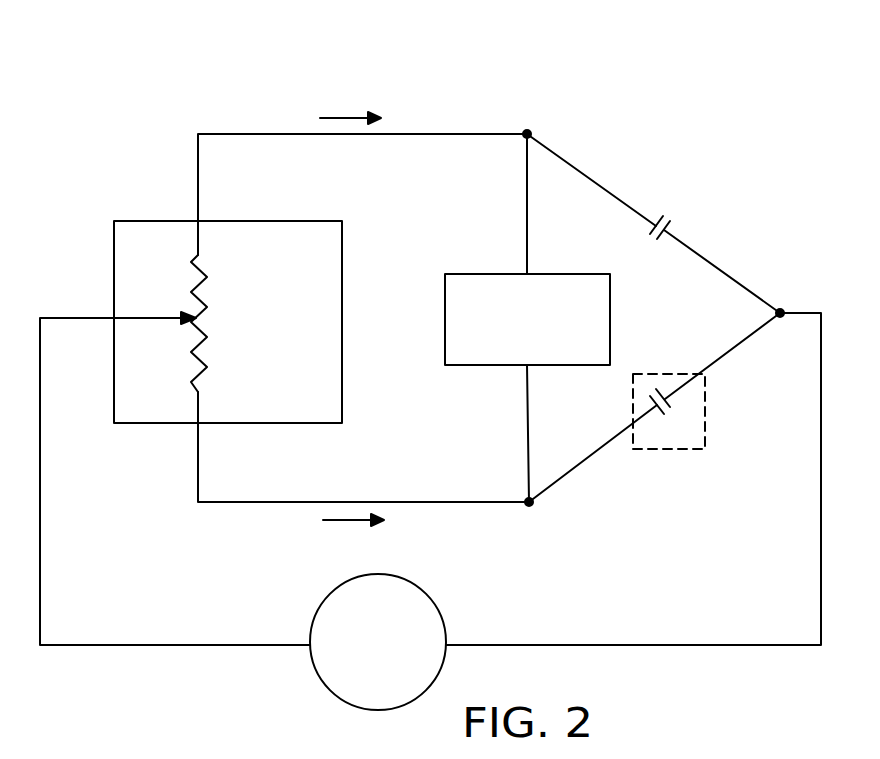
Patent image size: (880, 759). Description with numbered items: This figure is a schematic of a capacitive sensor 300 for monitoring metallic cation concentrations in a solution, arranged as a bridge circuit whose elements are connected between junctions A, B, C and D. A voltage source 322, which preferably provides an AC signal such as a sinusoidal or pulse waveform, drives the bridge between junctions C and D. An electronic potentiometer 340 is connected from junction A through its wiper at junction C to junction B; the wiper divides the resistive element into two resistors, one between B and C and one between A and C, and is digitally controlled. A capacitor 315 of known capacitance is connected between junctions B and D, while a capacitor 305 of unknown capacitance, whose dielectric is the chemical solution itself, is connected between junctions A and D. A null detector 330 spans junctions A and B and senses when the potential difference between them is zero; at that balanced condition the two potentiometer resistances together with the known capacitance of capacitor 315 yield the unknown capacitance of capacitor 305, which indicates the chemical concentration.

The sensor 300 is at (168, 86).
The capacitor 305 is at (706, 413).
The capacitor 315 is at (659, 218).
The voltage source 322 is at (340, 700).
The null detector 330 is at (472, 272).
The electronic potentiometer 340 is at (113, 246).